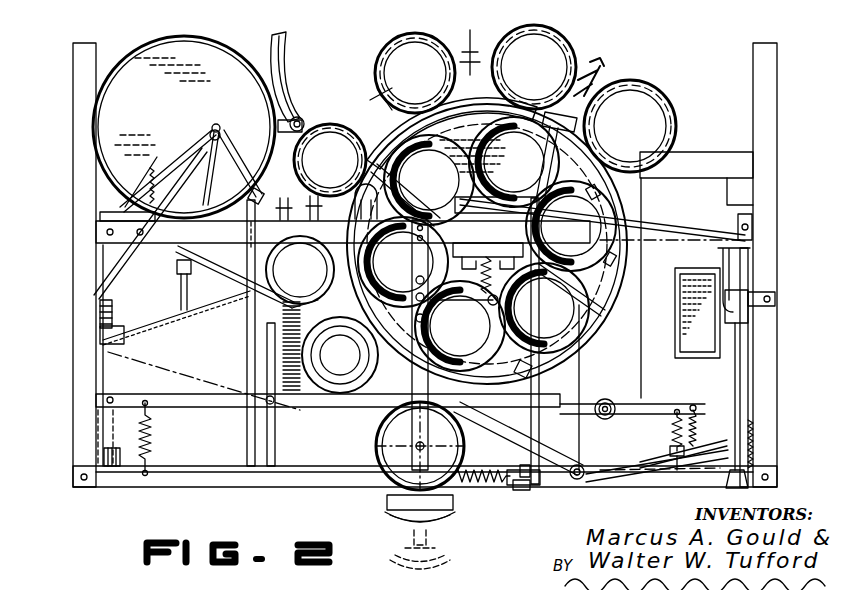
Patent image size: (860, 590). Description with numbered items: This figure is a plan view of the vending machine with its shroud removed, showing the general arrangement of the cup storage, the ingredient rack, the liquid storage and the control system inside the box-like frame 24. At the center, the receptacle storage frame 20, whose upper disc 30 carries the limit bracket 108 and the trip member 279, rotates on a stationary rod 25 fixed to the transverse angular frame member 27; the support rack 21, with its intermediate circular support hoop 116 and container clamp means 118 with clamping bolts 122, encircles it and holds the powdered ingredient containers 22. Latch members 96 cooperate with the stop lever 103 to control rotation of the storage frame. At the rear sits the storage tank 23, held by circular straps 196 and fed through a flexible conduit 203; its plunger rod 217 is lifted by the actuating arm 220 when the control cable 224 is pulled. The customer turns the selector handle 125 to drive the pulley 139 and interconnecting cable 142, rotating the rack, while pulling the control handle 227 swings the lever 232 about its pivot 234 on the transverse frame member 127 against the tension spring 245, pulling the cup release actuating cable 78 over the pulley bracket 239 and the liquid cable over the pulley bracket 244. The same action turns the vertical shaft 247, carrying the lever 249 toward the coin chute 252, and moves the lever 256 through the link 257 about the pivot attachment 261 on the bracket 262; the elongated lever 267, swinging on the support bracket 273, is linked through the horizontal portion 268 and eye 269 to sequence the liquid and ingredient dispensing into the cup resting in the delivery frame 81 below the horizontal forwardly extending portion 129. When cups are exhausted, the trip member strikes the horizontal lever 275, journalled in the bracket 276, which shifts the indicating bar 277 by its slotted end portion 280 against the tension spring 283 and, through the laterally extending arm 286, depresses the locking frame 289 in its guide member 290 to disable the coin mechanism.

The receptacle storage frame 20 is at (622, 290).
The support rack 21 is at (360, 162).
The containers 22 is at (428, 84).
The storage tank 23 is at (185, 107).
The frame 24 is at (742, 170).
The rod 25 is at (478, 240).
The transverse angular frame member 27 is at (310, 241).
The upper disc 30 is at (612, 272).
The cup release actuating cable 78 is at (142, 330).
The delivery frame 81 is at (265, 350).
The latch members 96 is at (608, 188).
The stop lever 103 is at (610, 330).
The limit bracket 108 is at (532, 392).
The intermediate circular support hoop 116 is at (610, 305).
The container clamp means 118 is at (655, 85).
The clamping bolt 122 is at (600, 66).
The selector handle 125 is at (386, 503).
The transverse frame member 127 is at (205, 470).
The horizontal forwardly extending portion 129 is at (378, 358).
The pulley 139 is at (378, 448).
The interconnecting cable 142 is at (380, 379).
The circular straps 196 is at (212, 40).
The flexible conduit 203 is at (290, 42).
The rod 217 is at (210, 136).
The actuating arm 220 is at (120, 270).
The control cable 224 is at (100, 378).
The control handle 227 is at (156, 146).
The lever 232 is at (236, 380).
The pivot 234 is at (252, 412).
The pulley bracket 239 is at (140, 462).
The pulley bracket 244 is at (112, 308).
The tension spring 245 is at (151, 424).
The vertical shaft 247 is at (582, 495).
The lever 249 is at (745, 426).
The coin chute 252 is at (750, 444).
The lever 256 is at (652, 400).
The link 257 is at (740, 342).
The pivot attachment 261 is at (610, 398).
The bracket 262 is at (620, 488).
The elongated lever 267 is at (240, 326).
The horizontal portion 268 is at (232, 176).
The eye 269 is at (225, 128).
The support bracket 273 is at (522, 430).
The horizontal lever 275 is at (536, 110).
The bracket 276 is at (540, 411).
The indicating bar 277 is at (322, 500).
The trip member 279 is at (616, 257).
The slotted end portion 280 is at (555, 492).
The tension spring 283 is at (500, 478).
The laterally extending arm 286 is at (590, 186).
The locking frame 289 is at (655, 222).
The guide member 290 is at (752, 217).